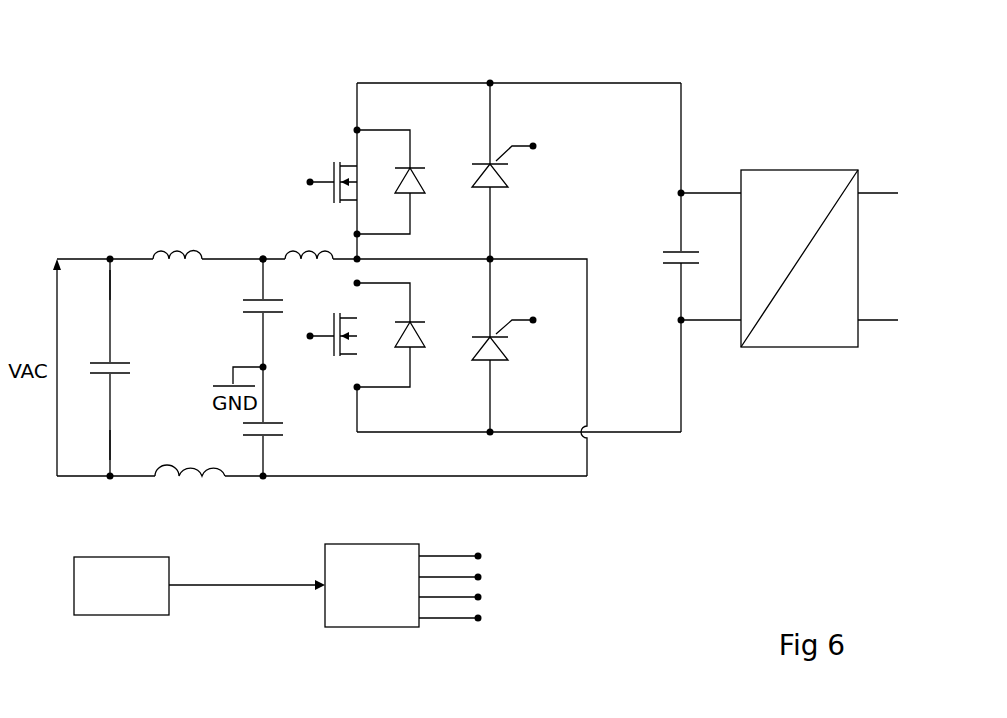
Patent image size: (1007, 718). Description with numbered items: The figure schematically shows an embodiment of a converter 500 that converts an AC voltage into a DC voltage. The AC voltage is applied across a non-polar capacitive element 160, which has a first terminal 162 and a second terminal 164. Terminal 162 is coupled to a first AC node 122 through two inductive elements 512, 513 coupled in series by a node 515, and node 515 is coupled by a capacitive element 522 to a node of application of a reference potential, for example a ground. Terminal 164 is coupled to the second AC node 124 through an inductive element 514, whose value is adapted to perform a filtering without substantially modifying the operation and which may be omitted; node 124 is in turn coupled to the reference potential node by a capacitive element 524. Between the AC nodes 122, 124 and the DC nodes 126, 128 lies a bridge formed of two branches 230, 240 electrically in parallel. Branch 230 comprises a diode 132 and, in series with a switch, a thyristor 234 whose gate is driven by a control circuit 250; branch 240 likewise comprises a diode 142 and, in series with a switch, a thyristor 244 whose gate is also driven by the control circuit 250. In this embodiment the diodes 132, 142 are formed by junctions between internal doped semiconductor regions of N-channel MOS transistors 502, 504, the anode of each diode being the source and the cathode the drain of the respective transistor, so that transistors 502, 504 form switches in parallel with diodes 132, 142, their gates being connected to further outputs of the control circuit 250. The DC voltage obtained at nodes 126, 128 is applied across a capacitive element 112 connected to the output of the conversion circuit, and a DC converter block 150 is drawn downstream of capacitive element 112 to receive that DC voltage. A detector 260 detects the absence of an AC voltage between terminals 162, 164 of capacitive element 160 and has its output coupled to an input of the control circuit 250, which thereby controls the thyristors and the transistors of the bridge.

The converter 500 is at (163, 140).
The branch 230 is at (356, 67).
The node 126 is at (490, 80).
The node 122 is at (359, 261).
The node 124 is at (491, 257).
The node 128 is at (489, 434).
The transistor 502 is at (333, 164).
The diode 132 is at (416, 192).
The transistor 504 is at (331, 357).
The diode 142 is at (418, 343).
The thyristor 234 is at (500, 175).
The thyristor 244 is at (500, 348).
The branch 240 is at (667, 450).
The capacitive element 112 is at (689, 265).
The DC-DC converter 150 is at (780, 168).
The inductive element 512 is at (182, 250).
The node 515 is at (261, 257).
The inductive element 513 is at (293, 250).
The inductive element 514 is at (182, 478).
The terminal 162 is at (111, 312).
The terminal 164 is at (110, 443).
The capacitive element 160 is at (123, 375).
The capacitive element 522 is at (248, 314).
The capacitive element 524 is at (273, 438).
The detector 260 is at (152, 606).
The control circuit 250 is at (389, 608).